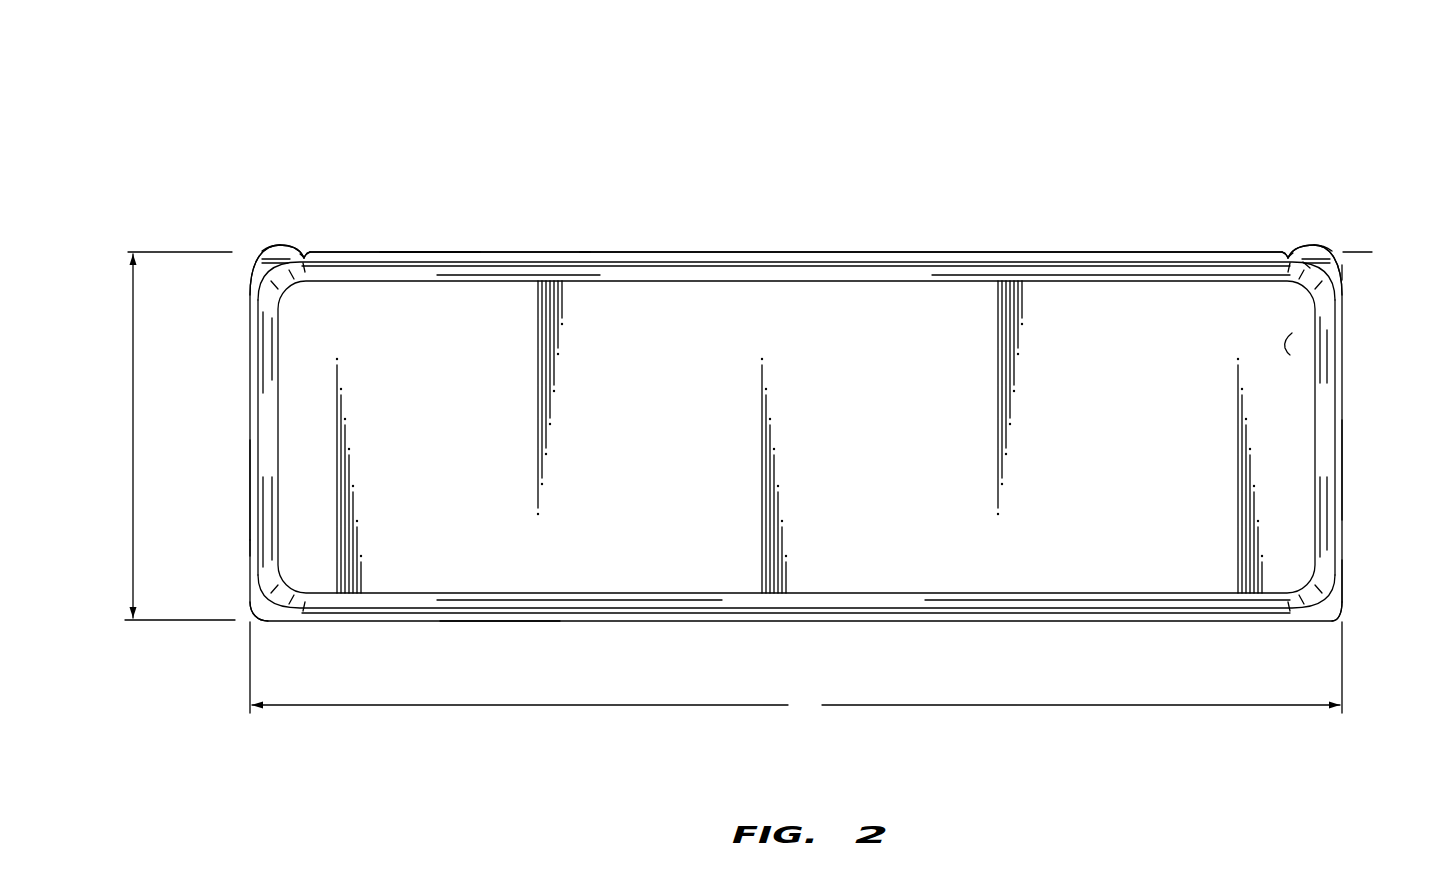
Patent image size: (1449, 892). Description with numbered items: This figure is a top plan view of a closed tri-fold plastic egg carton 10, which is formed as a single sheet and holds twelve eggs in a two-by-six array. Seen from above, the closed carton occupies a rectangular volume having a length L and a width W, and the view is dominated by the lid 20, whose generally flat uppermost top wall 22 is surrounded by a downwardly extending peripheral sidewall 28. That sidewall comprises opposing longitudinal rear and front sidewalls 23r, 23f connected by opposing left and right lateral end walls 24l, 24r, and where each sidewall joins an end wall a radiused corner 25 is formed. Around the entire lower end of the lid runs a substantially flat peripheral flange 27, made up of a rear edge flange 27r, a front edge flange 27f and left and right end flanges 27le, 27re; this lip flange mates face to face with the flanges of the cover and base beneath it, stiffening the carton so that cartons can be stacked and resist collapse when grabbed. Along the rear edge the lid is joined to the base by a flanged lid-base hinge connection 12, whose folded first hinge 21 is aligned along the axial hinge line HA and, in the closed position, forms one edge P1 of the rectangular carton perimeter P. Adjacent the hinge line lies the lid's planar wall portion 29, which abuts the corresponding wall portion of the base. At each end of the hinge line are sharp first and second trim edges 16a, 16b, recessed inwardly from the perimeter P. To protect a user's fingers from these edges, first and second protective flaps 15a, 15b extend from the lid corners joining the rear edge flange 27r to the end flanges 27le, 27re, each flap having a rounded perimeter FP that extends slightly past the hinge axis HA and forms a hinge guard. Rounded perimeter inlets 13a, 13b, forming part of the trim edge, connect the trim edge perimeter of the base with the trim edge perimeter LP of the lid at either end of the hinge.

The egg carton 10 is at (1033, 166).
The flanged lid-base hinge connection 12 is at (849, 247).
The rounded perimeter inlet 13a is at (304, 256).
The rounded perimeter inlet 13b is at (1290, 252).
The first protective flap 15a is at (265, 246).
The second protective flap 15b is at (1330, 252).
The first trim edge 16a is at (307, 250).
The second trim edge 16b is at (1281, 253).
The lid 20 is at (1294, 335).
The first hinge 21 is at (1016, 252).
The top wall 22 is at (1077, 303).
The rear sidewall 23r is at (608, 269).
The front sidewall 23f is at (892, 597).
The left lateral end wall 24l is at (272, 416).
The right lateral end wall 24r is at (1321, 421).
The corners 25 is at (268, 275).
The peripheral flange 27 is at (1347, 594).
The rear edge flange 27r is at (430, 251).
The front edge flange 27f is at (497, 622).
The left end flange 27le is at (250, 488).
The right end flange 27re is at (1343, 468).
The peripheral sidewall 28 is at (745, 278).
The planar wall portion 29 is at (902, 254).
The axial hinge line HA is at (537, 192).
The edge of carton perimeter P1 is at (585, 252).
The flap perimeter FP is at (1307, 265).
The lid trim edge perimeter LP is at (1345, 272).
The carton perimeter P is at (246, 547).
The width W is at (176, 437).
The length L is at (796, 671).